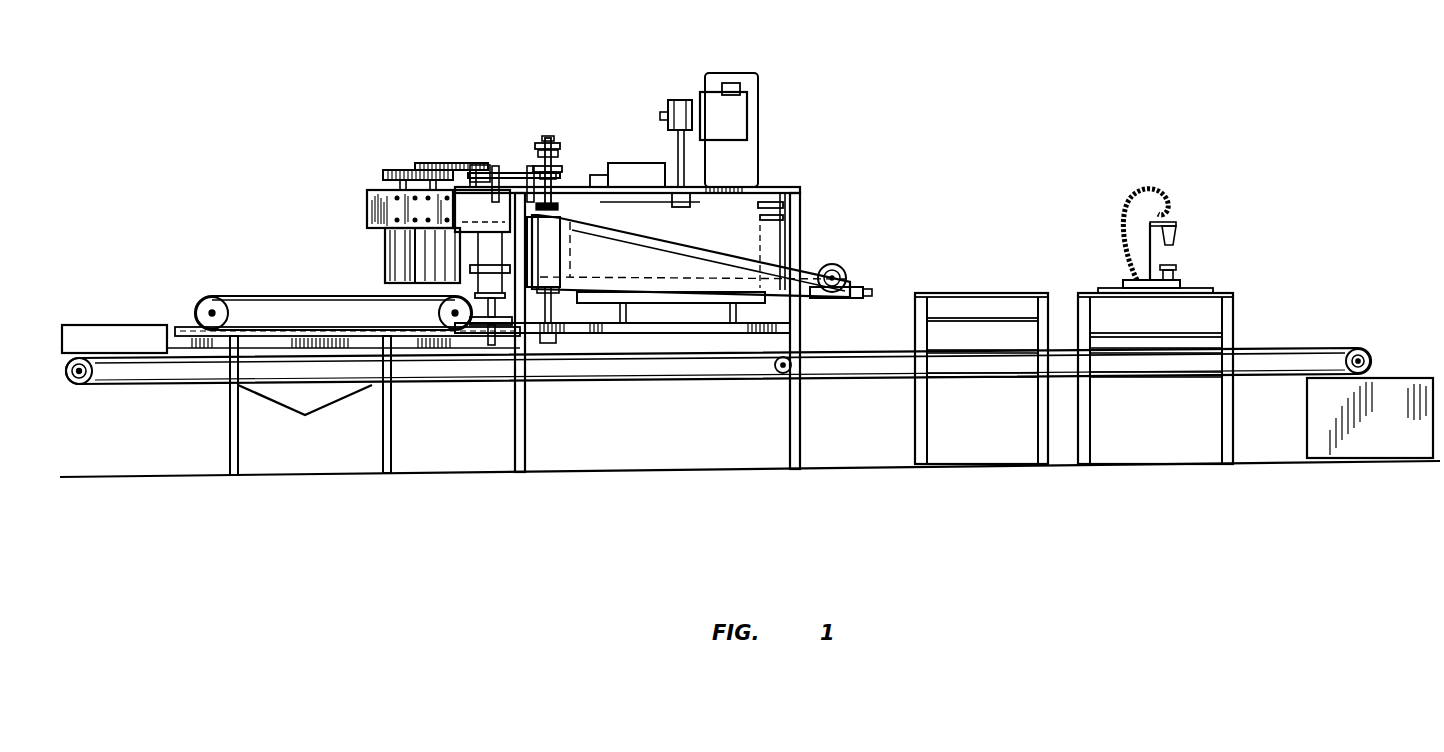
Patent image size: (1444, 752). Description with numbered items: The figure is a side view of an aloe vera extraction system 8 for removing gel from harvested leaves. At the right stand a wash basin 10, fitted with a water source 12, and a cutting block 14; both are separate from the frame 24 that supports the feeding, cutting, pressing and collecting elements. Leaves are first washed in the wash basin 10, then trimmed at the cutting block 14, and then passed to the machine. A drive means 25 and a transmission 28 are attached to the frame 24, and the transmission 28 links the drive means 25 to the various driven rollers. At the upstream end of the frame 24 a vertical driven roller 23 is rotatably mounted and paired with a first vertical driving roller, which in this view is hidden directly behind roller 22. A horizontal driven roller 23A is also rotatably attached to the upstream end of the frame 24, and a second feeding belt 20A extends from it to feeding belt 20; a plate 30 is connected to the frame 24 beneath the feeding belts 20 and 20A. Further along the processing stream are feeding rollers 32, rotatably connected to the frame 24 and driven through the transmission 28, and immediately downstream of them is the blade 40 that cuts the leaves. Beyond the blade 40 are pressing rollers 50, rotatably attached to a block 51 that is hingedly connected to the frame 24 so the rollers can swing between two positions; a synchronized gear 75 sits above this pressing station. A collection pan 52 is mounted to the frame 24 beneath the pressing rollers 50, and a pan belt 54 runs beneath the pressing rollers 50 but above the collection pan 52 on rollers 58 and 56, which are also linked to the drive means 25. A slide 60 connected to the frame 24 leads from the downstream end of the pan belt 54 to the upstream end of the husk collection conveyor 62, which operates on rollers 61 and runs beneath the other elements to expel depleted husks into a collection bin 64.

The aloe vera extraction system 8 is at (902, 66).
The wash basin 10 is at (1229, 281).
The water source 12 is at (1182, 240).
The cutting block 14 is at (966, 284).
The feeding belt 20 is at (792, 236).
The second feeding belt 20A is at (832, 262).
The roller 22 is at (580, 205).
The vertical driven roller 23 is at (790, 212).
The horizontal driven roller 23A is at (856, 278).
The frame 24 is at (785, 187).
The drive means 25 is at (660, 100).
The transmission 28 is at (550, 130).
The plate 30 is at (592, 295).
The feeding rollers 32 is at (508, 190).
The blade 40 is at (470, 170).
The pressing rollers 50 is at (430, 262).
The block 51 is at (367, 210).
The collection pan 52 is at (314, 397).
The pan belt 54 is at (240, 294).
The roller 56 is at (446, 312).
The roller 58 is at (206, 298).
The slide 60 is at (118, 326).
The rollers 61 is at (90, 386).
The husk collection conveyor 62 is at (84, 384).
The collection bin 64 is at (1318, 408).
The synchronized gear 75 is at (425, 160).